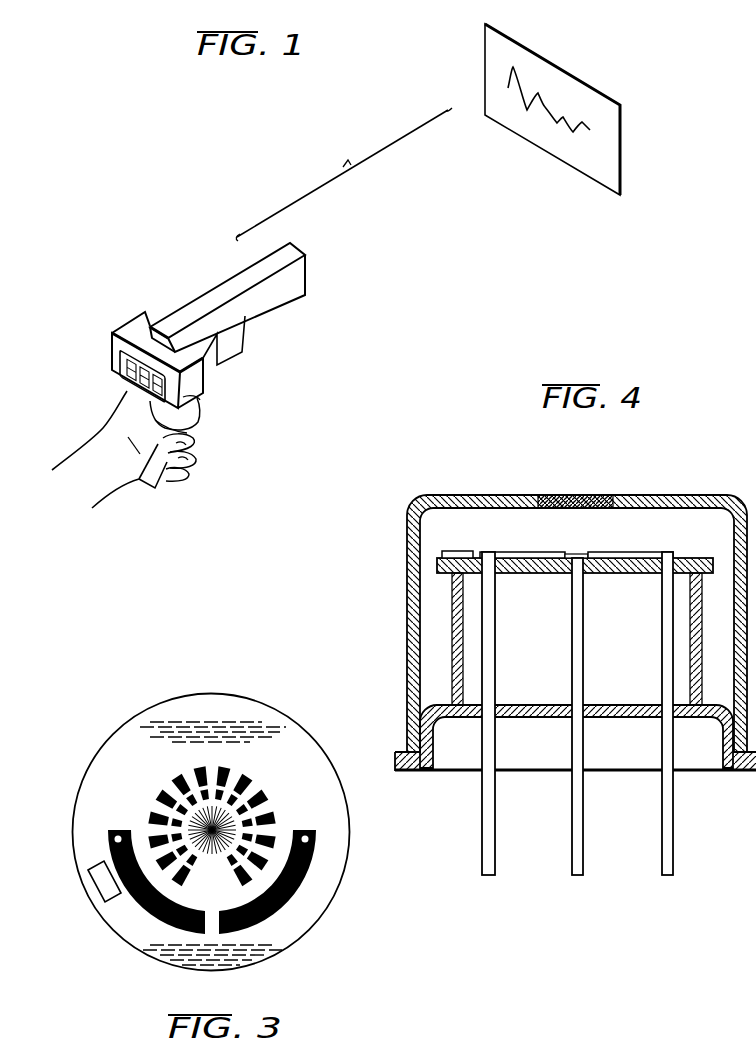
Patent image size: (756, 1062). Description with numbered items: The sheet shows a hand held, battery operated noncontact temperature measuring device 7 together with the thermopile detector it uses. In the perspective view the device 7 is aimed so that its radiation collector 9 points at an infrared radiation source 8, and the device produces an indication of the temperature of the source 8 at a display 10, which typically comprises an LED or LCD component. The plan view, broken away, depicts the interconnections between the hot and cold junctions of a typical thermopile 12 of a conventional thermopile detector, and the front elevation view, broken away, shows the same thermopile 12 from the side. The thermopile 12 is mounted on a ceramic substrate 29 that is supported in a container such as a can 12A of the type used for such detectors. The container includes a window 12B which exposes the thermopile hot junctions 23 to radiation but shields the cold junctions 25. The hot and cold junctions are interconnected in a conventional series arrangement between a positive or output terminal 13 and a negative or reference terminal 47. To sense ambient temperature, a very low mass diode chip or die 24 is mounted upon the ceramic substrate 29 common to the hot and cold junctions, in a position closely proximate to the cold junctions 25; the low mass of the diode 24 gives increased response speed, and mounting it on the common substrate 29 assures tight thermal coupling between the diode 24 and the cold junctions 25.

In FIG. 1, the noncontact temperature measuring device 7 is at (214, 270).
In FIG. 1, the infrared radiation source 8 is at (568, 86).
In FIG. 1, the radiation collector 9 is at (307, 268).
In FIG. 1, the display 10 is at (122, 360).
In FIG. 3, the thermopile 12 is at (150, 798).
In FIG. 4, the TO-5 can 12A is at (409, 581).
In FIG. 4, the window 12B is at (573, 504).
In FIG. 3, the positive or output terminal 13 is at (313, 836).
In FIG. 4, the positive or output terminal 13 is at (670, 877).
In FIG. 3, the hot junctions 23 is at (257, 877).
In FIG. 4, the hot junctions 23 is at (620, 552).
In FIG. 3, the diode chip 24 is at (107, 890).
In FIG. 4, the diode chip 24 is at (452, 551).
In FIG. 3, the cold junctions 25 is at (175, 887).
In FIG. 4, the cold junctions 25 is at (515, 552).
In FIG. 3, the ceramic substrate 29 is at (137, 718).
In FIG. 4, the ceramic substrate 29 is at (693, 557).
In FIG. 3, the negative or reference terminal 47 is at (108, 837).
In FIG. 4, the negative or reference terminal 47 is at (490, 877).